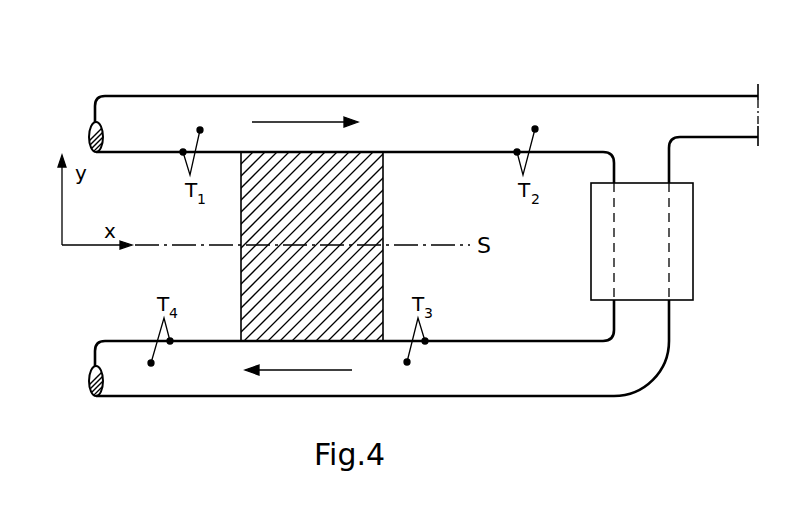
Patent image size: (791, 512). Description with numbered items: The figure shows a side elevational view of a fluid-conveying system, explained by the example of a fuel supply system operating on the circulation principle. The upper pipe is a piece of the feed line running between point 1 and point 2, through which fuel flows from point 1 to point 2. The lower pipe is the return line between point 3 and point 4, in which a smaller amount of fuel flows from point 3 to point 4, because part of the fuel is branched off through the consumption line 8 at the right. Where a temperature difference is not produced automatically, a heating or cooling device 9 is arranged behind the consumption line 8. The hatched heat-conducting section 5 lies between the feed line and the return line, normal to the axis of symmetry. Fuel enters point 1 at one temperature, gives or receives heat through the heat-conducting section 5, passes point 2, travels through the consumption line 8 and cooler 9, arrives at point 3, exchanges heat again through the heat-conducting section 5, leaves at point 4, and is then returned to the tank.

The feed line inlet point 1 is at (89, 135).
The feed line outlet point 2 is at (536, 96).
The return line inlet point 3 is at (542, 396).
The return line outlet point 4 is at (88, 394).
The heat-conducting section 5 is at (371, 197).
The consumption line 8 is at (717, 100).
The heating or cooling device 9 is at (693, 232).